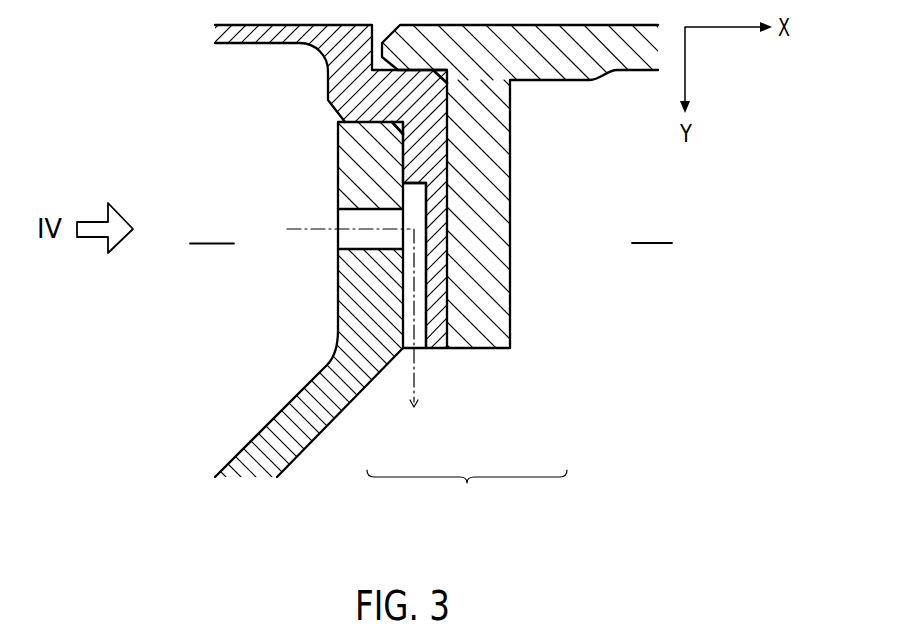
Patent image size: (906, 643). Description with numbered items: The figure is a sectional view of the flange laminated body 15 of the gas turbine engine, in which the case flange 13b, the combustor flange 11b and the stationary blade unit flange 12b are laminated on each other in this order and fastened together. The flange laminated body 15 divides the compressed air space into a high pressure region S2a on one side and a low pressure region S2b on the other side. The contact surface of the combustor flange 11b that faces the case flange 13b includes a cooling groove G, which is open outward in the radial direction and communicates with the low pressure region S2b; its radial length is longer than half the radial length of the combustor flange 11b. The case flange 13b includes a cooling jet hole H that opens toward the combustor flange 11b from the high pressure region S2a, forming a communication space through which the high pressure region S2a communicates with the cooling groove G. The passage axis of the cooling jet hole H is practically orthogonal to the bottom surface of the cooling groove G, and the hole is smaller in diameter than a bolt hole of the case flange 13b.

The combustor flange 11b is at (438, 330).
The stationary blade unit flange 12b is at (477, 335).
The case flange 13b is at (373, 287).
The flange laminated body 15 is at (467, 496).
The cooling jet hole H is at (338, 248).
The cooling groove G is at (420, 207).
The high pressure region S2a is at (212, 230).
The low pressure region S2b is at (652, 228).